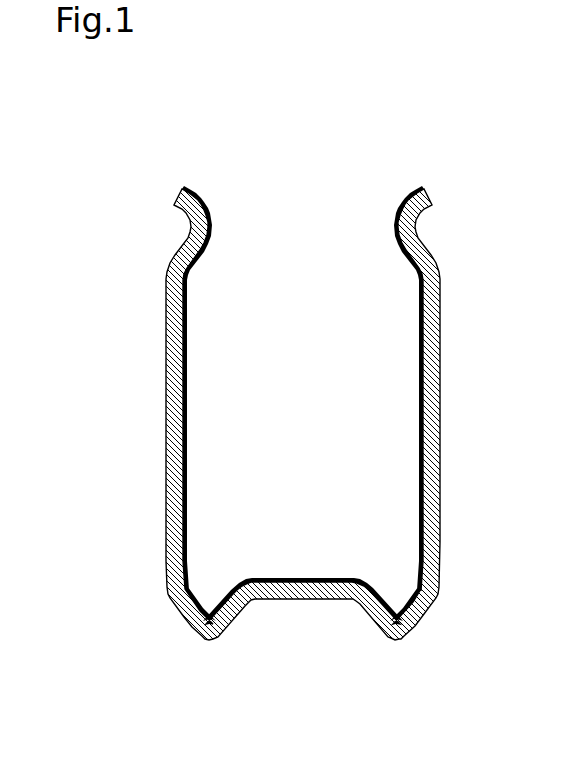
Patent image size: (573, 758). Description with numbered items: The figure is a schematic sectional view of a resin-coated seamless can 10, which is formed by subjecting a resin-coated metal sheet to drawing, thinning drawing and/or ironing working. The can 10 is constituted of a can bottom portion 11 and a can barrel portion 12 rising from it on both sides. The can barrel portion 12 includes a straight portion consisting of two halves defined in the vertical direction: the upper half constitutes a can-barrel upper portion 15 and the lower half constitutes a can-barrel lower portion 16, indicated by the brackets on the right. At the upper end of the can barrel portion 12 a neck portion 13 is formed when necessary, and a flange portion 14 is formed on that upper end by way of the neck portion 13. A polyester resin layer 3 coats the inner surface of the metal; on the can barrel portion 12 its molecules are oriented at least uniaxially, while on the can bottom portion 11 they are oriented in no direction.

The resin-coated seamless can 10 is at (251, 456).
The polyester resin layer 3 is at (186, 364).
The can bottom portion 11 is at (278, 577).
The can barrel portion 12 is at (147, 265).
The neck portion 13 is at (209, 234).
The flange portion 14 is at (189, 194).
The can-barrel upper portion 15 is at (460, 247).
The can-barrel lower portion 16 is at (460, 583).